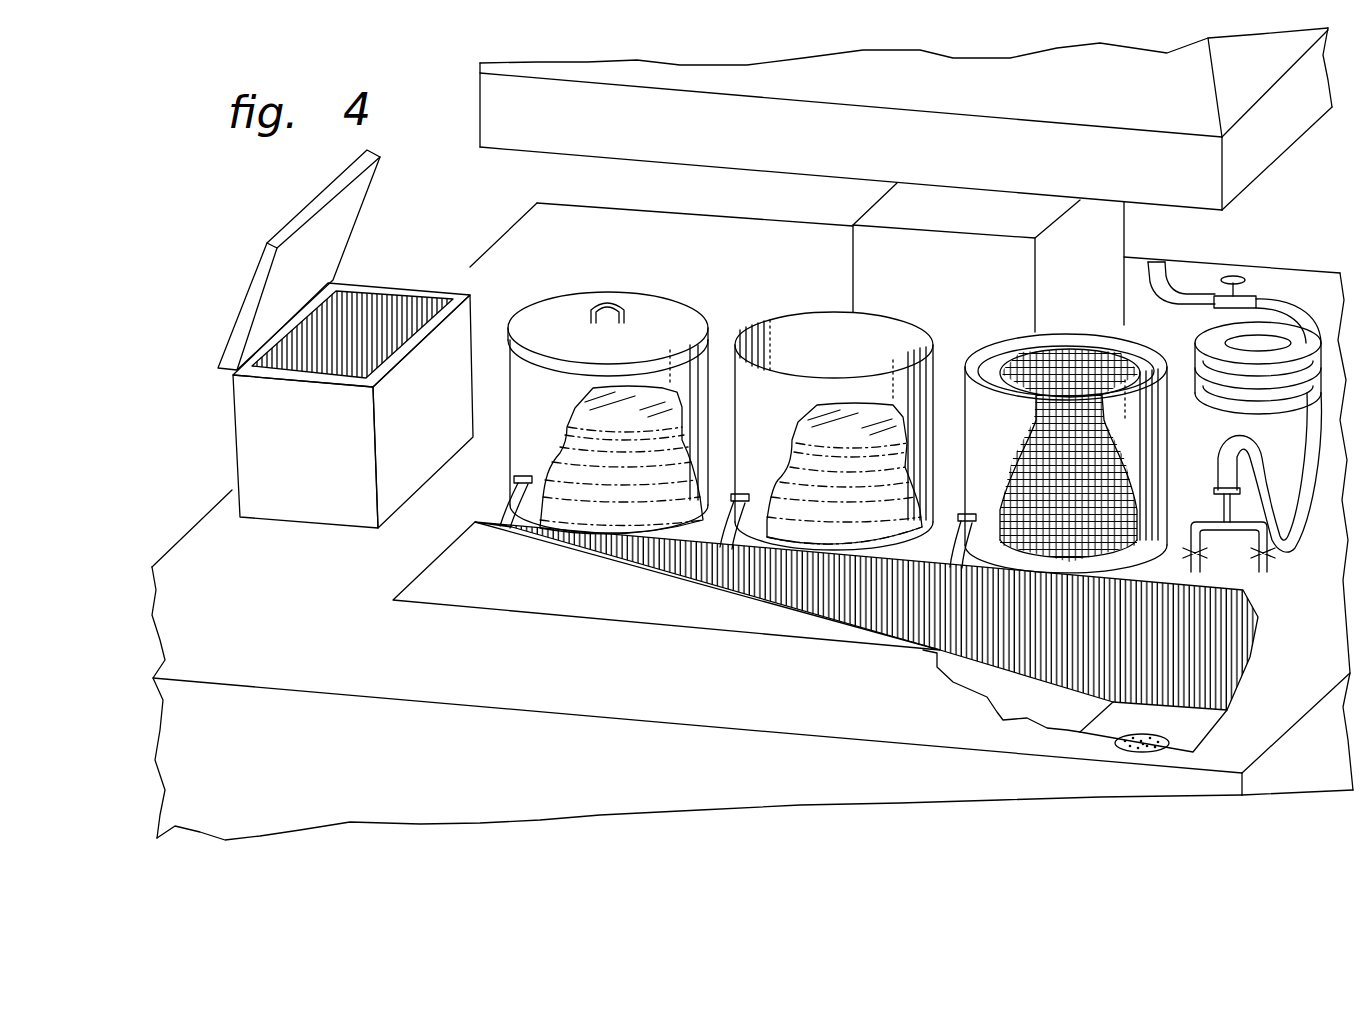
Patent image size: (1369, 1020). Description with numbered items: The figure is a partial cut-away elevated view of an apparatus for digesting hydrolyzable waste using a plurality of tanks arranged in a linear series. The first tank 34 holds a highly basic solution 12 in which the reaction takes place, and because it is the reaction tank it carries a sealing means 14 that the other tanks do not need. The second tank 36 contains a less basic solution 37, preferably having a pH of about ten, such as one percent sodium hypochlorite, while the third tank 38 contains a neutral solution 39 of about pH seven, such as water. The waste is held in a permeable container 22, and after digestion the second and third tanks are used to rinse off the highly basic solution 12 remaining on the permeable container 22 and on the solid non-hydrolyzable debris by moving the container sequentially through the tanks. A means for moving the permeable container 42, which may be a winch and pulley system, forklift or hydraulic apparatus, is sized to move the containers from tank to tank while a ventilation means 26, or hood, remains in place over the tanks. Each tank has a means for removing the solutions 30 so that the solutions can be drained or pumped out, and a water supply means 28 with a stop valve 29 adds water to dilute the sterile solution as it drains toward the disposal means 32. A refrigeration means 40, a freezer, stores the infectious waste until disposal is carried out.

The highly basic solution 12 is at (632, 513).
The sealing means 14 is at (618, 382).
The permeable container 22 is at (1053, 411).
The ventilation means 26 is at (1243, 165).
The water supply means 28 is at (1295, 565).
The stop valve 29 is at (1241, 274).
The means for removing the solutions 30 is at (510, 503).
The disposal means 32 is at (1180, 725).
The first tank 34 is at (710, 352).
The second tank 36 is at (834, 397).
The less basic solution 37 is at (860, 529).
The third tank 38 is at (985, 348).
The neutral solution 39 is at (1014, 438).
The refrigeration means 40 is at (262, 446).
The means for moving the permeable container 42 is at (932, 277).